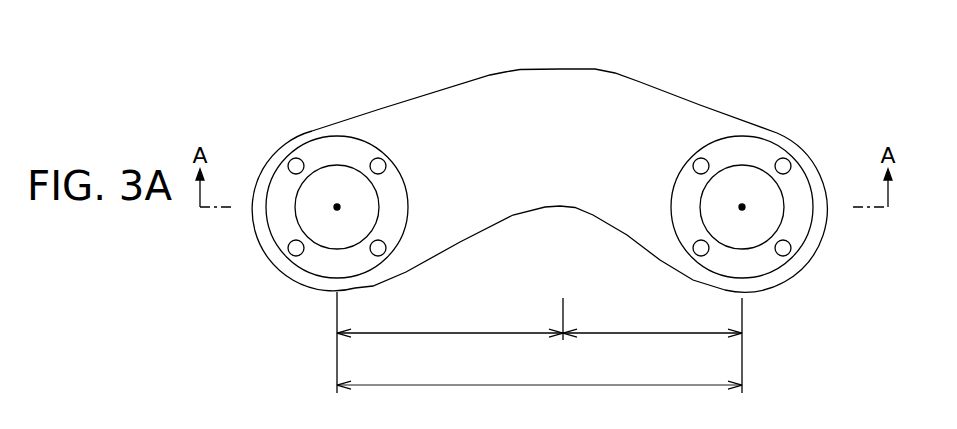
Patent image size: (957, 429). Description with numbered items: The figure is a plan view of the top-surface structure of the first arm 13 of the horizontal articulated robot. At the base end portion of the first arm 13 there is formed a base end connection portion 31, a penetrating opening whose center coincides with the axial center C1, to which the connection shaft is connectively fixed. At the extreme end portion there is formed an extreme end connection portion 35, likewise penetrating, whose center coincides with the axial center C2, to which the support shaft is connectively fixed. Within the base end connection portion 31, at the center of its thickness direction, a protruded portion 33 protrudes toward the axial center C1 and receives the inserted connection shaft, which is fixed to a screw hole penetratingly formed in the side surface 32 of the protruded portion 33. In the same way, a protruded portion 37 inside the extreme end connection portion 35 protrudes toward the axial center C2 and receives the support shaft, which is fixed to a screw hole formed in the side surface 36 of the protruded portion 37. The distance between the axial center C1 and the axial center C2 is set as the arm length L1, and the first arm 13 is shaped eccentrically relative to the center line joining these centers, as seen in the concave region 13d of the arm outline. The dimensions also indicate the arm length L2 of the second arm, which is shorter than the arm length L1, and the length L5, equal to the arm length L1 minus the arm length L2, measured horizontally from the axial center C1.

The first arm 13 is at (556, 82).
The concave recess of arm 13d is at (561, 207).
The base end connection portion 31 is at (762, 136).
The side surface 32 is at (802, 180).
The protruded portion 33 is at (755, 240).
The extreme end connection portion 35 is at (322, 136).
The side surface 36 is at (282, 180).
The protruded portion 37 is at (331, 245).
The axial center C1 is at (740, 207).
The axial center C2 is at (340, 207).
The arm length L1 is at (539, 373).
The arm length L2 is at (450, 342).
The length L5 is at (652, 345).